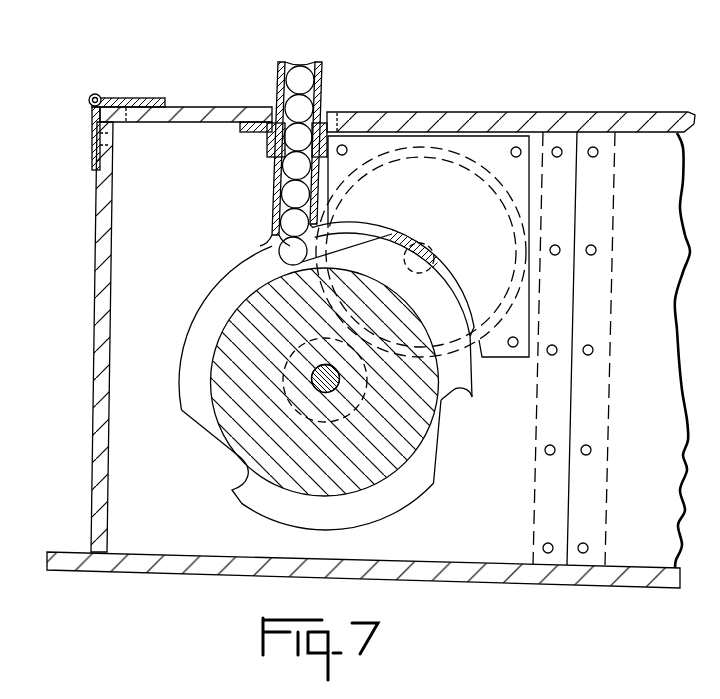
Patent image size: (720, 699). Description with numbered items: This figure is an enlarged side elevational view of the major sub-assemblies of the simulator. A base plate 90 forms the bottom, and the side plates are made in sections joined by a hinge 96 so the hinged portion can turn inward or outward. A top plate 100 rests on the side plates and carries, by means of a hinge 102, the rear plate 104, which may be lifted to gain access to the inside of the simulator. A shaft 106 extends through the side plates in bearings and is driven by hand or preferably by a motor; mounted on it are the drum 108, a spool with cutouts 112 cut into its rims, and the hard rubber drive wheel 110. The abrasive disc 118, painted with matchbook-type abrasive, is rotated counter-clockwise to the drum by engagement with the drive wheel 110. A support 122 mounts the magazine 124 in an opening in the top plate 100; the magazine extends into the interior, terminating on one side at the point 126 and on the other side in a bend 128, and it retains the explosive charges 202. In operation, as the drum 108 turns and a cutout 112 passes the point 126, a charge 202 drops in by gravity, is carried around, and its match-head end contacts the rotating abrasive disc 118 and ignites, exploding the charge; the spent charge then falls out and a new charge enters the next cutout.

The base plate 90 is at (591, 576).
The hinge 96 is at (607, 152).
The top plate 100 is at (457, 118).
The hinge 102 is at (92, 117).
The rear plate 104 is at (103, 398).
The shaft 106 is at (237, 463).
The drum 108 is at (252, 500).
The drive wheel 110 is at (352, 413).
The cutout 112 is at (446, 405).
The abrasive disc 118 is at (340, 246).
The support 122 is at (269, 120).
The magazine 124 is at (318, 79).
The magazine end 126 is at (274, 240).
The bend 128 is at (416, 248).
The explosive charge 202 is at (302, 80).